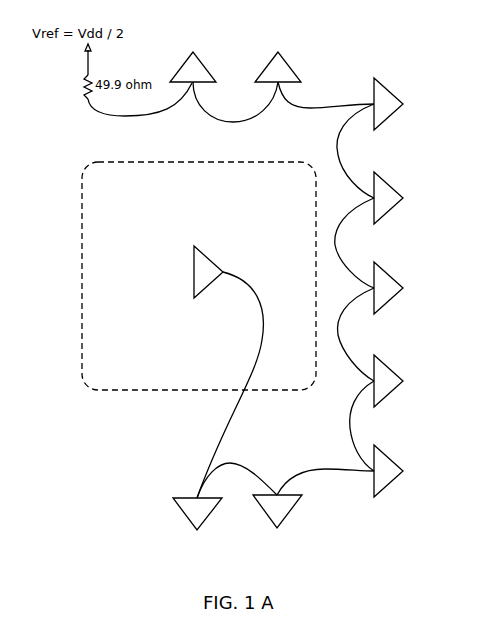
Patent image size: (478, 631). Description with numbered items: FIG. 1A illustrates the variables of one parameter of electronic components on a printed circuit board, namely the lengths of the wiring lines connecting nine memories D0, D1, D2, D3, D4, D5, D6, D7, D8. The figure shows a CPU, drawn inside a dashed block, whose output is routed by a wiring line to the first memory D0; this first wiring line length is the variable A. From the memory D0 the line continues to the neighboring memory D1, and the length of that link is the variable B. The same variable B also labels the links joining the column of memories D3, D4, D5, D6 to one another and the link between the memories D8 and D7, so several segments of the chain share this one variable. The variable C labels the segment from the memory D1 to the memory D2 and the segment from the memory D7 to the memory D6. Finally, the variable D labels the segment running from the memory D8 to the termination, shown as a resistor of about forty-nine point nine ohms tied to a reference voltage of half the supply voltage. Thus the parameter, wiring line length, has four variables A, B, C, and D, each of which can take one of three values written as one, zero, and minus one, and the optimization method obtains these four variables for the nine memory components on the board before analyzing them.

The CPU driver output CPU is at (187, 272).
The memory D0 is at (197, 535).
The memory D1 is at (277, 532).
The memory D2 is at (407, 471).
The memory D3 is at (407, 381).
The memory D4 is at (406, 288).
The memory D5 is at (404, 198).
The memory D6 is at (404, 104).
The memory D7 is at (278, 54).
The memory D8 is at (193, 54).
The variable A is at (230, 385).
The variable B is at (283, 290).
The variable C is at (325, 288).
The variable D is at (140, 99).